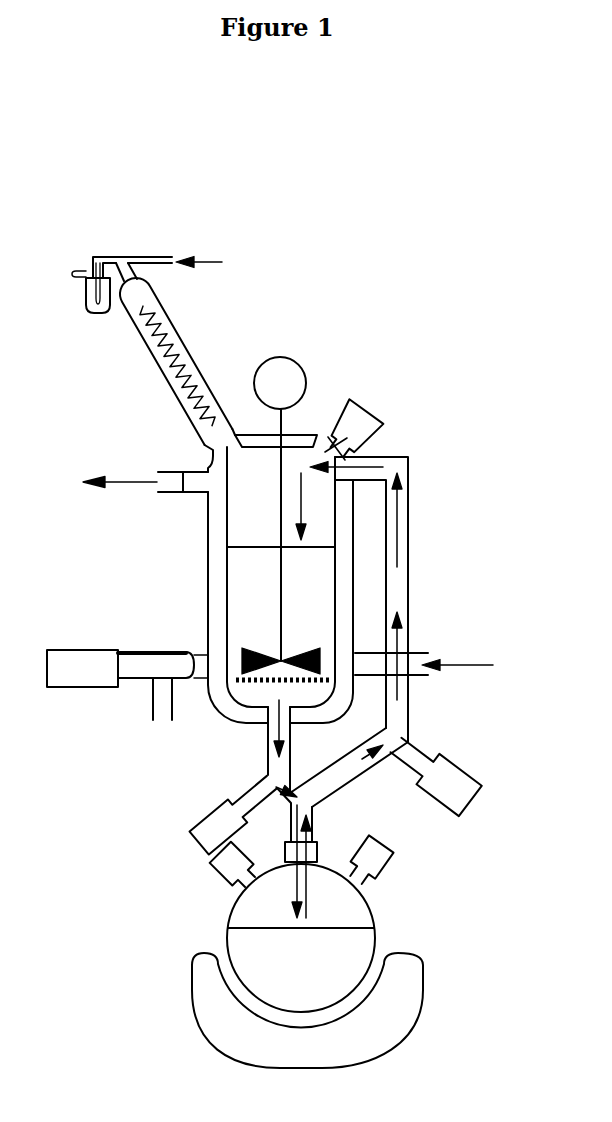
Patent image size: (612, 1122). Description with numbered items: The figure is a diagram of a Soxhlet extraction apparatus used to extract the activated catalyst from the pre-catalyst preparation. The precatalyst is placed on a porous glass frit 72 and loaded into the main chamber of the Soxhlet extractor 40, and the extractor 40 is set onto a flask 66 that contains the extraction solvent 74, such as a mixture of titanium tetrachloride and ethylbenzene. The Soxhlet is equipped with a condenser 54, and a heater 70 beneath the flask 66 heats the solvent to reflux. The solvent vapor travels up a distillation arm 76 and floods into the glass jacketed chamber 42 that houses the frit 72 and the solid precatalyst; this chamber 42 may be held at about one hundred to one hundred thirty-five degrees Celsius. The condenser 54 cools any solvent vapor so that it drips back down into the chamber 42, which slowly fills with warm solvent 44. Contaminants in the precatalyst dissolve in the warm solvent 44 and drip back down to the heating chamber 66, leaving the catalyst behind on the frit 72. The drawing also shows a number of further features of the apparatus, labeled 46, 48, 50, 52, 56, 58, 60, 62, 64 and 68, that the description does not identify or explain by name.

The Soxhlet extractor 40 is at (149, 585).
The chamber 42 is at (258, 529).
The warm solvent 44 is at (240, 608).
The inlet 46 is at (453, 665).
The gas outlet port 48 is at (118, 482).
The motor 50 is at (275, 357).
The stirrer impeller 52 is at (243, 656).
The condenser 54 is at (150, 355).
The inlet line 56 is at (222, 262).
The probe 58 is at (150, 706).
The return inlet valve 60 is at (350, 443).
The port joint 62 is at (362, 400).
The outlet line 64 is at (270, 722).
The flask 66 is at (231, 914).
The flask side joint 68 is at (207, 842).
The heater 70 is at (192, 1028).
The porous glass frit 72 is at (247, 683).
The extraction solvent 74 is at (377, 948).
The distillation arm 76 is at (412, 549).